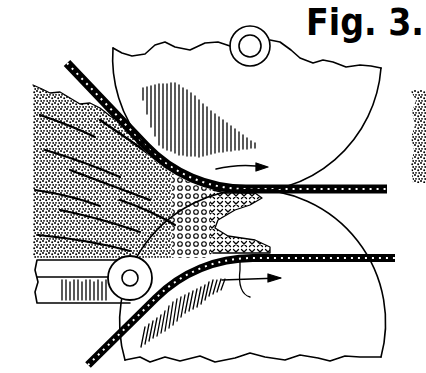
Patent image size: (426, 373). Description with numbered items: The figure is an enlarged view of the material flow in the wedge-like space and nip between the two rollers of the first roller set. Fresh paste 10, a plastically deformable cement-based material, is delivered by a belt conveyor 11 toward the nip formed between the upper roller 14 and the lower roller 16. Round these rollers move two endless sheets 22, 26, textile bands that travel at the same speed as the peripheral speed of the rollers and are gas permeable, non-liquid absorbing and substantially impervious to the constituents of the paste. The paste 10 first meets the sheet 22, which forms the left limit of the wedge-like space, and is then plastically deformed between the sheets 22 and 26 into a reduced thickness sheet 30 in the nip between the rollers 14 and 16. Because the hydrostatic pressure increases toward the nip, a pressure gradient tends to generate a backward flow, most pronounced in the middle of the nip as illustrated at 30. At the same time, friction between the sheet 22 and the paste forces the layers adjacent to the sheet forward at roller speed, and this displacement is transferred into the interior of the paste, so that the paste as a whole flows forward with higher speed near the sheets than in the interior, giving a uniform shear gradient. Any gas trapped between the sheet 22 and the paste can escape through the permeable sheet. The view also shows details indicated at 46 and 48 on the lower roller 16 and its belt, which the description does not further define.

The fresh paste 10 is at (48, 86).
The endless sheet 22 is at (88, 81).
The roller 14 is at (350, 121).
The roller 16 is at (340, 318).
The reduced thickness sheet 30 is at (228, 224).
The belt surface 48 is at (257, 288).
The roller shading 46 is at (205, 293).
The belt conveyor 11 is at (75, 303).
The endless sheet 26 is at (97, 353).